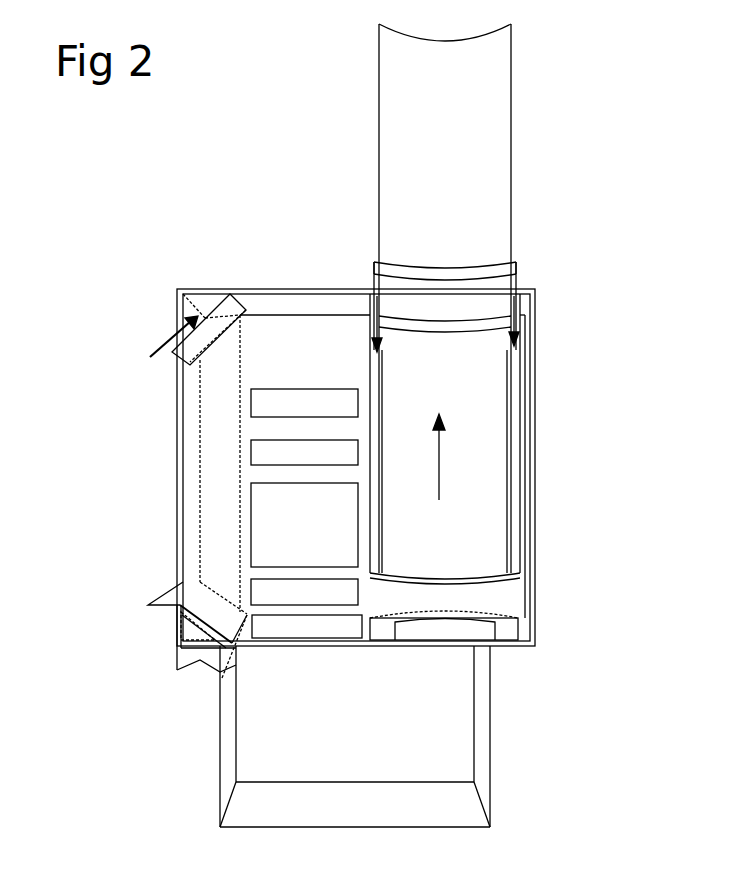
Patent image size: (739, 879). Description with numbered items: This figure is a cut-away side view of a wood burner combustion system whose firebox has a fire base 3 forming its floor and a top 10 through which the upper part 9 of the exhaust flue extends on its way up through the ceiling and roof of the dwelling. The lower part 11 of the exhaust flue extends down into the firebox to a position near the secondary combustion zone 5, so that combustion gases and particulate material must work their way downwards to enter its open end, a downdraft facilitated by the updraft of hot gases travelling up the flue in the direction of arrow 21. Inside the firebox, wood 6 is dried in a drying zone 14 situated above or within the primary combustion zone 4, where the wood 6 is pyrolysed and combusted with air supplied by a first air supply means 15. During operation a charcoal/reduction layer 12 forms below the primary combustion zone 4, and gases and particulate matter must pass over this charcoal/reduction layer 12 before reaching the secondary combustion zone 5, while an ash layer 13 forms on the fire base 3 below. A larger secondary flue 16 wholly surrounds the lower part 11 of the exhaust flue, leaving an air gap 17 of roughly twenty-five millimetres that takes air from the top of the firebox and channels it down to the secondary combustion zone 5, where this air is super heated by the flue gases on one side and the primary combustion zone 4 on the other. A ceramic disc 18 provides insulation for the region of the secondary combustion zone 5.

The fire base 3 is at (238, 642).
The primary combustion zone 4 is at (126, 448).
The secondary combustion zone 5 is at (445, 584).
The wood 6 is at (268, 452).
The upper part of the exhaust flue 9 is at (454, 125).
The top of the firebox 10 is at (250, 289).
The lower part of the exhaust flue 11 is at (475, 389).
The charcoal/reduction layer 12 is at (268, 598).
The ash layer 13 is at (282, 625).
The drying zone 14 is at (306, 360).
The first air supply means 15 is at (150, 357).
The secondary flue 16 is at (370, 352).
The air gap 17 is at (377, 296).
The ceramic disc 18 is at (512, 628).
The direction of flue gas flow 21 is at (439, 473).